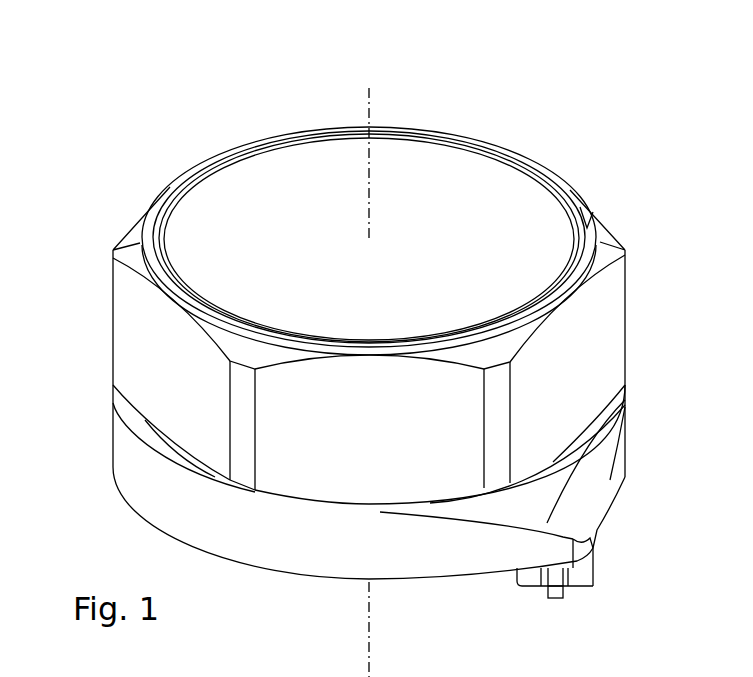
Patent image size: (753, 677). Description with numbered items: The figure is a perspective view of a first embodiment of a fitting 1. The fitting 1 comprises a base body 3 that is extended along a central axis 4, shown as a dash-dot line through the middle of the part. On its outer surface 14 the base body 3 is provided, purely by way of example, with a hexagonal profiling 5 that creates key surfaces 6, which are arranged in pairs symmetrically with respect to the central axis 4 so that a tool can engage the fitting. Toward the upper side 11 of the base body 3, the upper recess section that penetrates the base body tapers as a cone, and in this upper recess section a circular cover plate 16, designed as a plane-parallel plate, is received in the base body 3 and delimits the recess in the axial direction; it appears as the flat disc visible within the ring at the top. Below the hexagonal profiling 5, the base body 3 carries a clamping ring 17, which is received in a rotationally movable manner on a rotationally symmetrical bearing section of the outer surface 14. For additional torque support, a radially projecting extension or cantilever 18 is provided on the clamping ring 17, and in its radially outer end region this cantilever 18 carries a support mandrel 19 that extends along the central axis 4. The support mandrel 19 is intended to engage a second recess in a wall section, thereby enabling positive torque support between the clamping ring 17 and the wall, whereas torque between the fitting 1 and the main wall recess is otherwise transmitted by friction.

The fitting 1 is at (597, 135).
The base body 3 is at (177, 190).
The central axis 4 is at (368, 110).
The hexagonal profiling 5 is at (150, 332).
The key surfaces 6 is at (608, 332).
The upper side 11 is at (590, 223).
The outer surface 14 is at (311, 455).
The cover plate 16 is at (203, 253).
The clamping ring 17 is at (140, 480).
The cantilever 18 is at (515, 553).
The support mandrel 19 is at (587, 580).